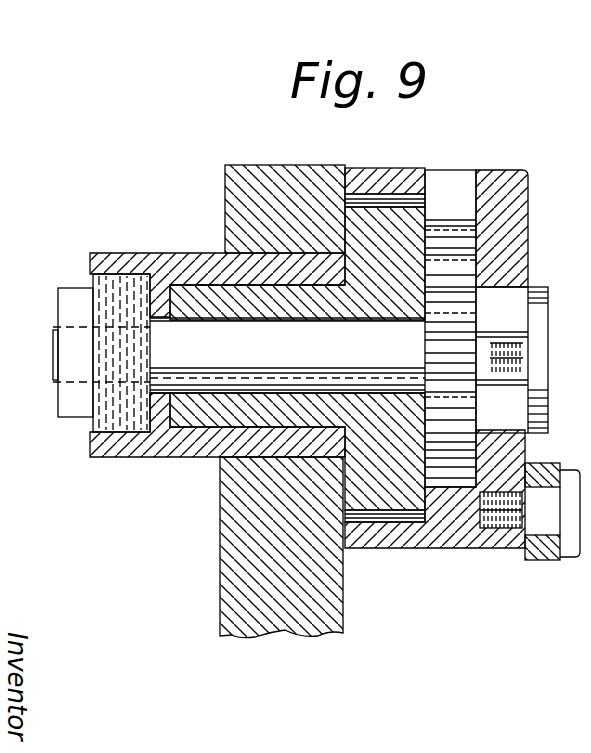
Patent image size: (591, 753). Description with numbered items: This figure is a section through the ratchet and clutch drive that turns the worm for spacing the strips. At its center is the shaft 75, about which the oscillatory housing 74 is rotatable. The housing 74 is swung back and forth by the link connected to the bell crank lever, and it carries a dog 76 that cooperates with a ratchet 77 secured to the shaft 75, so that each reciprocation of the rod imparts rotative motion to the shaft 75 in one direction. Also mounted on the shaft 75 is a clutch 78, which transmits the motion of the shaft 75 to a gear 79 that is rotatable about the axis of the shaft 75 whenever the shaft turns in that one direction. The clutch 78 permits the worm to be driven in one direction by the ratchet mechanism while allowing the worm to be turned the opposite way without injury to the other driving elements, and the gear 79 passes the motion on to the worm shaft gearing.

The oscillatory housing 74 is at (537, 158).
The shaft 75 is at (349, 360).
The dog 76 is at (455, 171).
The ratchet 77 is at (452, 478).
The clutch 78 is at (77, 428).
The gear 79 is at (386, 513).